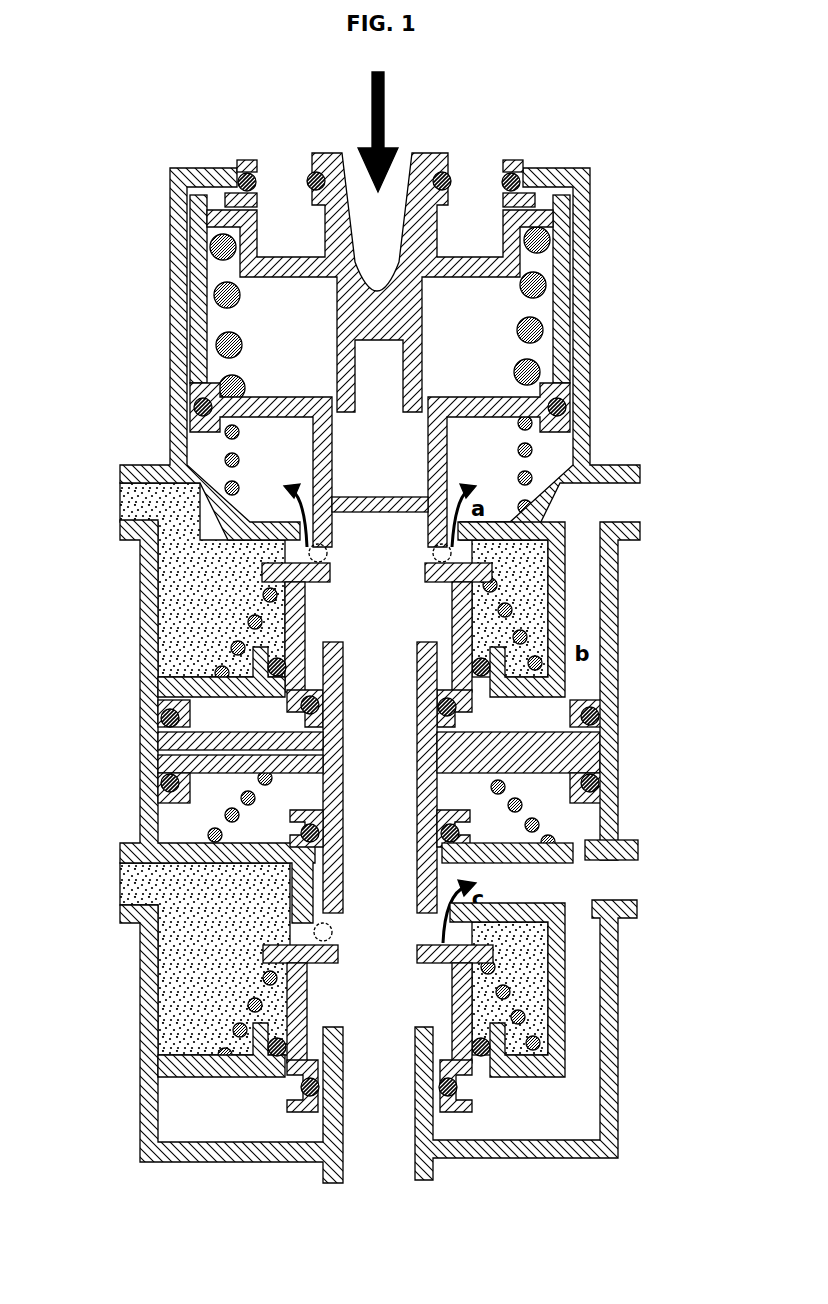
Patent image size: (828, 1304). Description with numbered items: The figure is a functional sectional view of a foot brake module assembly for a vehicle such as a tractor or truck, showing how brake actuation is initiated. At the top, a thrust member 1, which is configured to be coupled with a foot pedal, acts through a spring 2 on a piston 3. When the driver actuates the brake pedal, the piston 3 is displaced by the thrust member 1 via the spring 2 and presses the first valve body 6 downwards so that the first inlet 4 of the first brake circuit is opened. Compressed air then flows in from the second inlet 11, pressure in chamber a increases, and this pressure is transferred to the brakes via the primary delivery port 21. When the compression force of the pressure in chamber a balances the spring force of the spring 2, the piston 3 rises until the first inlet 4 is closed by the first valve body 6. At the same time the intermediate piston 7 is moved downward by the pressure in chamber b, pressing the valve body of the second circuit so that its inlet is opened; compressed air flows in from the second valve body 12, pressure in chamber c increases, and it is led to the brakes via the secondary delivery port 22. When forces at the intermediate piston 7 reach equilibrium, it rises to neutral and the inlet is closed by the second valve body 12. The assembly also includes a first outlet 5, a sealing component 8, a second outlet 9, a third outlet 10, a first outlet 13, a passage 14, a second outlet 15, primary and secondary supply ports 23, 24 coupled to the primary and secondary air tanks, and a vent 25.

The thrust member 1 is at (308, 203).
The spring 2 is at (222, 343).
The piston 3 is at (575, 248).
The first inlet 4 is at (458, 568).
The first outlet 5 is at (590, 538).
The first valve body 6 is at (462, 627).
The intermediate piston 7 is at (583, 708).
The sealing component 8 is at (596, 718).
The second outlet 9 is at (582, 847).
The third outlet 10 is at (590, 905).
The second inlet 11 is at (457, 948).
The second valve body 12 is at (257, 1024).
The first outlet 13 is at (313, 943).
The passage 14 is at (343, 752).
The second outlet 15 is at (330, 575).
The primary delivery port 21 is at (632, 500).
The secondary delivery port 22 is at (632, 880).
The primary supply port 23 is at (118, 505).
The secondary supply port 24 is at (118, 882).
The vent 25 is at (378, 1185).